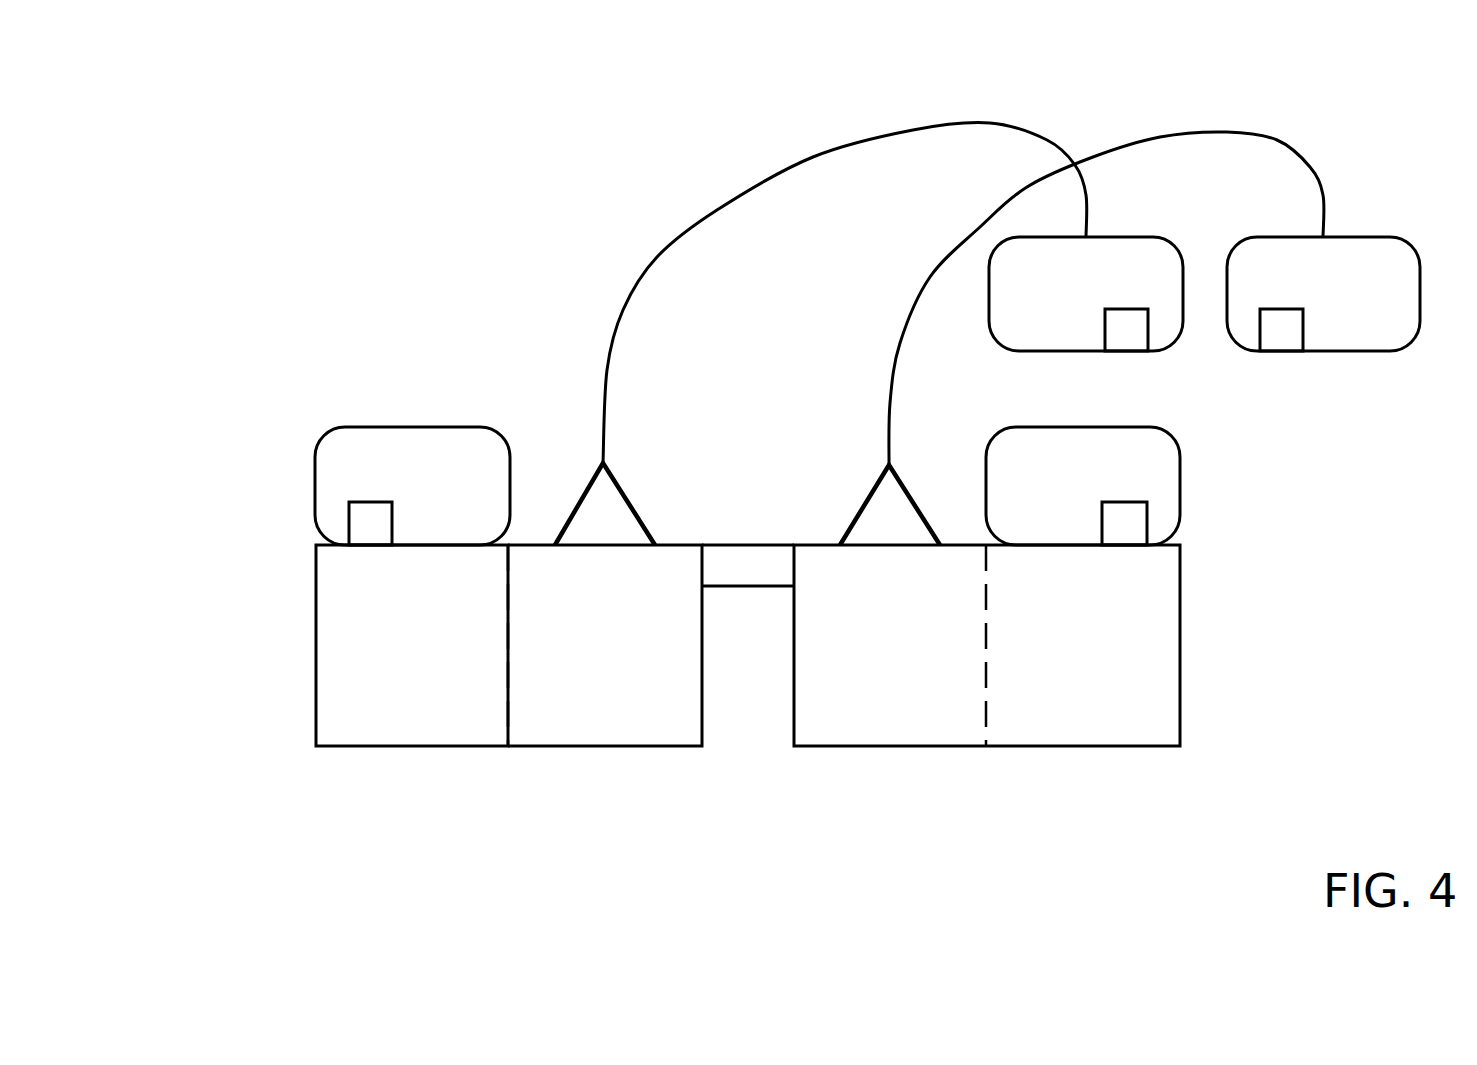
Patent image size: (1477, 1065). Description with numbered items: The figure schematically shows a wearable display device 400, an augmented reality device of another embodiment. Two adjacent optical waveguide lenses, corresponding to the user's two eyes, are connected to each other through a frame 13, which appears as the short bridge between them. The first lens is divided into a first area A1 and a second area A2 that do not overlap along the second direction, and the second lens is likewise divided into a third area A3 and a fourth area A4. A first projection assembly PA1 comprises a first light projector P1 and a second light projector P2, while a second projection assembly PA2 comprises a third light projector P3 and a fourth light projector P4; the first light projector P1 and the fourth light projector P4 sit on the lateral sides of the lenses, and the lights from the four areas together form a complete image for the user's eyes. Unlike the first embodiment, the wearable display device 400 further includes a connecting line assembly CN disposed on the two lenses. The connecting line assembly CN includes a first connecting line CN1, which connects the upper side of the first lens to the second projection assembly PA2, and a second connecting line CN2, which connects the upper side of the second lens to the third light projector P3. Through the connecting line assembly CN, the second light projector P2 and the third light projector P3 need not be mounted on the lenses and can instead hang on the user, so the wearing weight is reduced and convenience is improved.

The wearable display device 400 is at (132, 177).
The frame 13 is at (745, 563).
The first area A1 is at (393, 663).
The second area A2 is at (583, 663).
The third area A3 is at (868, 663).
The fourth area A4 is at (1061, 663).
The first light projector P1 is at (358, 465).
The second light projector P2 is at (1058, 313).
The third light projector P3 is at (1358, 313).
The fourth light projector P4 is at (1138, 465).
The first projection assembly PA1 is at (245, 210).
The second projection assembly PA2 is at (245, 312).
The connecting line assembly CN is at (1215, 38).
The first connecting line CN1 is at (989, 124).
The second connecting line CN2 is at (1178, 134).